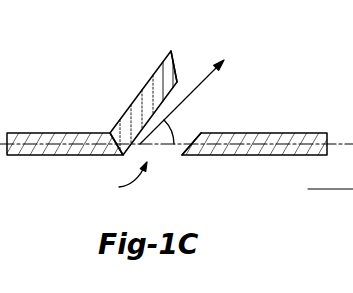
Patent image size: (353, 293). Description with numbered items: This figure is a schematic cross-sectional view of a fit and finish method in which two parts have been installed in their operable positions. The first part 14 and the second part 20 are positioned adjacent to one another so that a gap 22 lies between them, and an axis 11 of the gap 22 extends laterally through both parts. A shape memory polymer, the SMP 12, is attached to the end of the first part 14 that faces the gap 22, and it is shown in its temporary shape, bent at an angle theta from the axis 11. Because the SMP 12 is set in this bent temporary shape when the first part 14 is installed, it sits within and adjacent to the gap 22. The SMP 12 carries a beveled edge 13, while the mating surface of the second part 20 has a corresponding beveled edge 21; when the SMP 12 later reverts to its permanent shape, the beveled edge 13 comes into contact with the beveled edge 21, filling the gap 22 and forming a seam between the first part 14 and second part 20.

The axis 11 is at (152, 150).
The shape memory polymer (SMP) 12 is at (150, 92).
The beveled edge 13 is at (176, 62).
The first part 14 is at (56, 137).
The second part 20 is at (297, 142).
The beveled edge 21 is at (200, 133).
The gap 22 is at (122, 179).